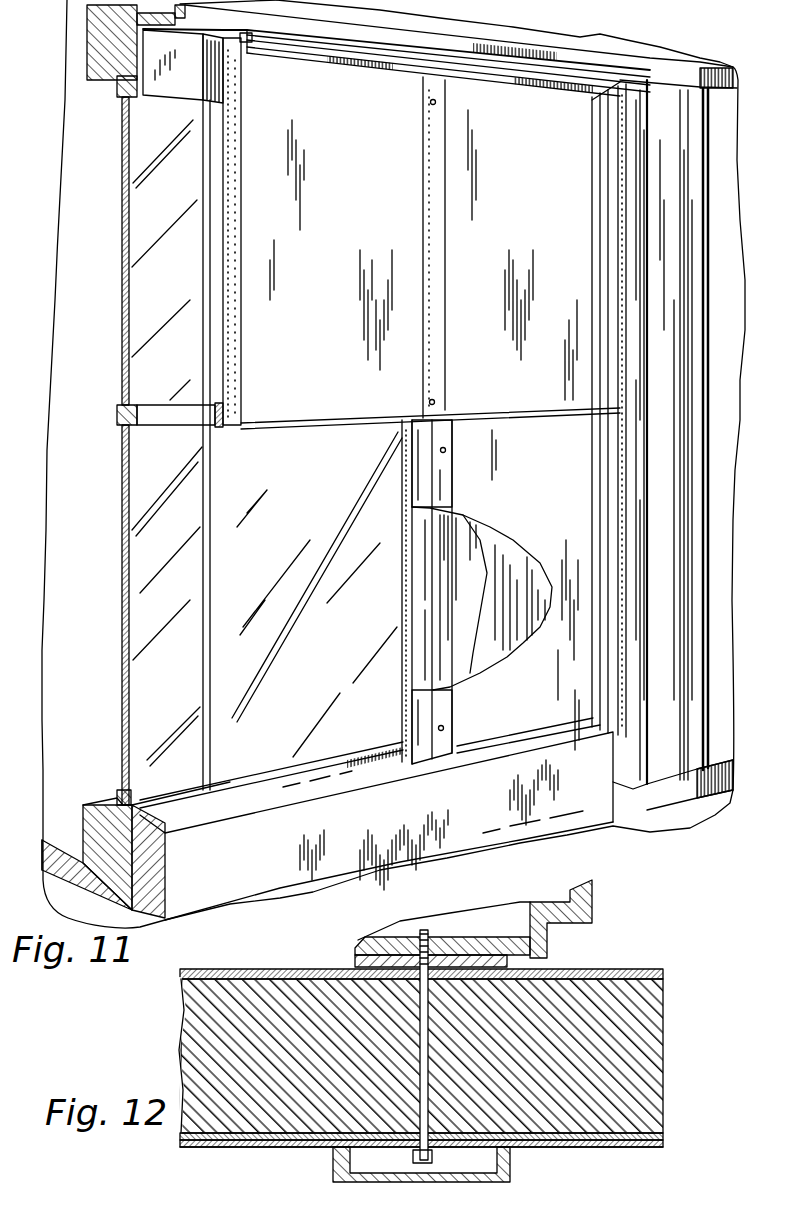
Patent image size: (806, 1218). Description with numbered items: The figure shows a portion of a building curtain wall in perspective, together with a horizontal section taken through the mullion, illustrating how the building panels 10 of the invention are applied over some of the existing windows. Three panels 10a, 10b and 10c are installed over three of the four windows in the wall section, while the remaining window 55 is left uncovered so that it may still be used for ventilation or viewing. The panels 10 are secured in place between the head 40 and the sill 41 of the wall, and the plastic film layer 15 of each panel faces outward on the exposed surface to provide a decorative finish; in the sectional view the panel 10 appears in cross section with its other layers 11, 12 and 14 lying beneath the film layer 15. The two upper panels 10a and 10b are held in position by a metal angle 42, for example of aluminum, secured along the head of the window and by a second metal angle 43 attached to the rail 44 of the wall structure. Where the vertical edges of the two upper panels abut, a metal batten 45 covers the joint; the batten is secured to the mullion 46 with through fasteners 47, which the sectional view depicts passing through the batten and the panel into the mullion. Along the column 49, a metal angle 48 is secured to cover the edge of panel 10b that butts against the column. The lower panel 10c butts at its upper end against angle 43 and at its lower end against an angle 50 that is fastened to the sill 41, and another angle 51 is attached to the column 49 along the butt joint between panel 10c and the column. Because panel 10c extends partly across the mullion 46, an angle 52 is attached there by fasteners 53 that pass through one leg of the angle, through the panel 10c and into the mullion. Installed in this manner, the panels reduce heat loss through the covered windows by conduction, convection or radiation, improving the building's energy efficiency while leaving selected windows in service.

In FIG. 12, the building panel 10 is at (632, 1053).
In FIG. 11, the upper panel 10a is at (305, 242).
In FIG. 11, the upper panel 10b is at (545, 256).
In FIG. 11, the lower panel 10c is at (540, 474).
In FIG. 12, the inner sheet 11 is at (653, 1127).
In FIG. 11, the outer sheet 12 is at (493, 523).
In FIG. 12, the outer sheet 12 is at (655, 978).
In FIG. 11, the intermediate layer 14 is at (517, 555).
In FIG. 11, the plastic film layer 15 is at (293, 407).
In FIG. 12, the plastic film layer 15 is at (653, 1147).
In FIG. 11, the head 40 is at (203, 34).
In FIG. 11, the sill 41 is at (248, 800).
In FIG. 11, the metal angle 42 is at (360, 63).
In FIG. 11, the metal angle 43 is at (217, 412).
In FIG. 11, the rail 44 is at (140, 433).
In FIG. 11, the metal batten 45 is at (433, 150).
In FIG. 12, the metal batten 45 is at (350, 1180).
In FIG. 11, the mullion 46 is at (417, 608).
In FIG. 12, the mullion 46 is at (547, 948).
In FIG. 11, the through fasteners 47 is at (433, 248).
In FIG. 12, the through fasteners 47 is at (420, 1043).
In FIG. 11, the metal angle 48 is at (610, 153).
In FIG. 11, the column 49 is at (672, 187).
In FIG. 11, the angle 50 is at (424, 762).
In FIG. 11, the angle 51 is at (607, 557).
In FIG. 11, the angle 52 is at (447, 690).
In FIG. 11, the fasteners 53 is at (447, 728).
In FIG. 11, the window 55 is at (292, 704).